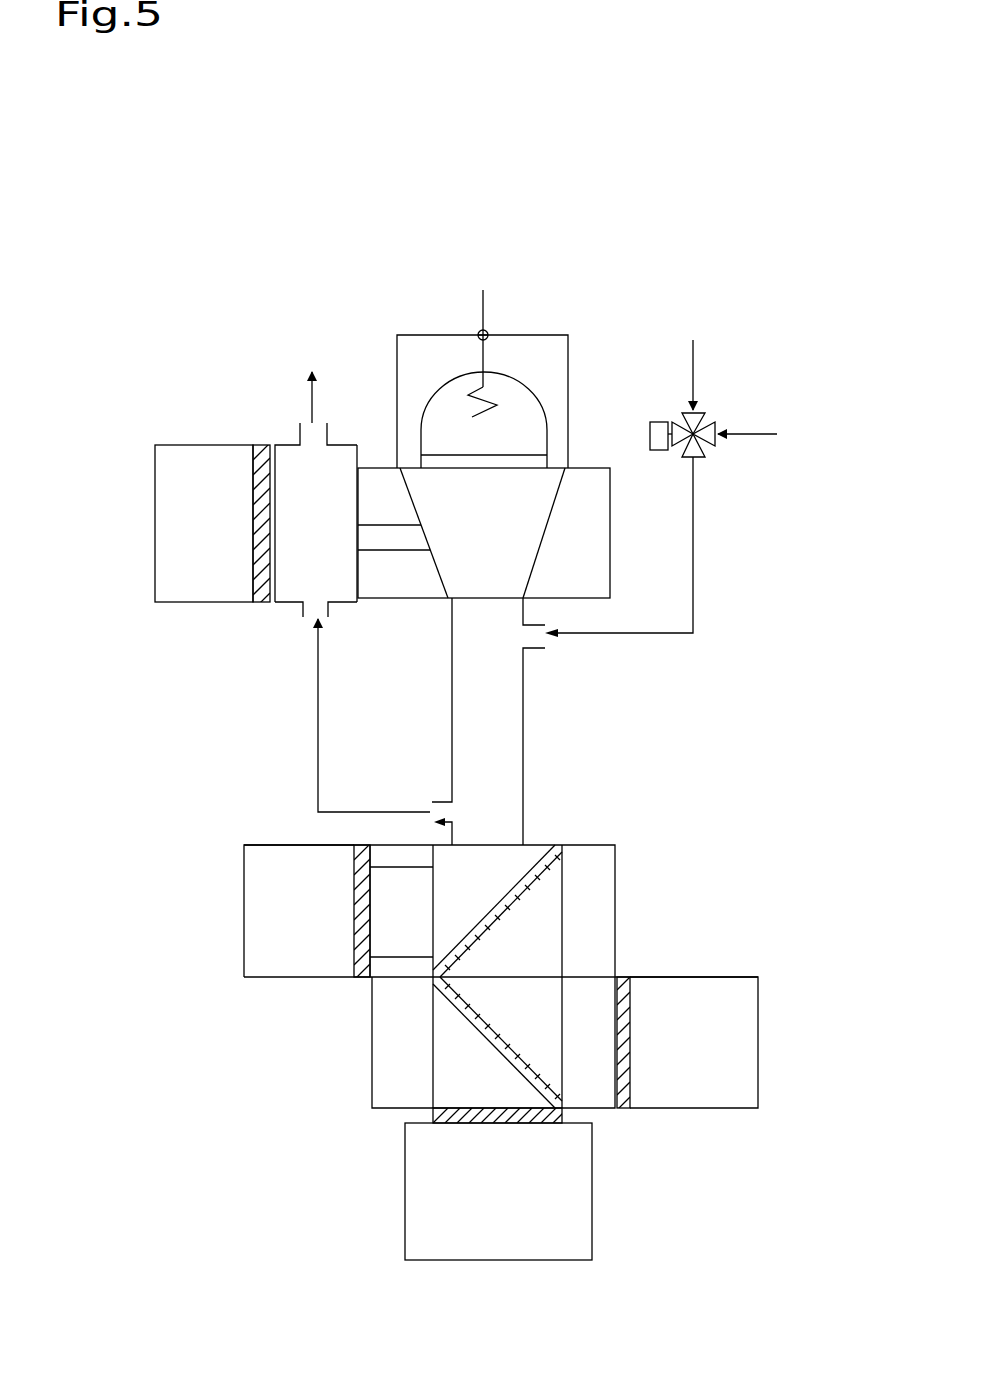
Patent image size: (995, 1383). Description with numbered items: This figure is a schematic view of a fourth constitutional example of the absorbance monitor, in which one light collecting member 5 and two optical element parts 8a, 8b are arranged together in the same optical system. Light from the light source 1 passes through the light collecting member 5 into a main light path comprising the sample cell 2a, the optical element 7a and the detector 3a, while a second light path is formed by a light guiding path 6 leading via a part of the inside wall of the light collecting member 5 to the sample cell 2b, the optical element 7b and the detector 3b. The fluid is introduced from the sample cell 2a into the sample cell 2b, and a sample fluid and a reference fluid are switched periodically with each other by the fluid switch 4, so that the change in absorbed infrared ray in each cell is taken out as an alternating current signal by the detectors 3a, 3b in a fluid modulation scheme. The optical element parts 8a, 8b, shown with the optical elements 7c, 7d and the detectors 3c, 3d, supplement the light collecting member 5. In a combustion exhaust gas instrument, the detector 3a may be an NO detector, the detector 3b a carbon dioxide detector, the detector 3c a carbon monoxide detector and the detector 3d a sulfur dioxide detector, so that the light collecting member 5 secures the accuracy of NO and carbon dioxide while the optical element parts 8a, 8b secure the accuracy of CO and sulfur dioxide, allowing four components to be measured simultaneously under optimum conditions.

The light source 1 is at (568, 362).
The sample cell 2a is at (522, 750).
The sample cell 2b is at (295, 605).
The detector 3a is at (525, 1260).
The detector 3b is at (197, 600).
The detector 3c is at (282, 975).
The detector 3d is at (732, 1108).
The fluid switch 4 is at (708, 423).
The light collecting member 5 is at (605, 545).
The light guiding path 6 is at (393, 543).
The optical element 7a is at (452, 1120).
The optical element 7b is at (258, 443).
The optical element 7c is at (362, 978).
The optical element 7d is at (623, 1110).
The optical element part 8a is at (608, 932).
The optical element part 8b is at (372, 1058).